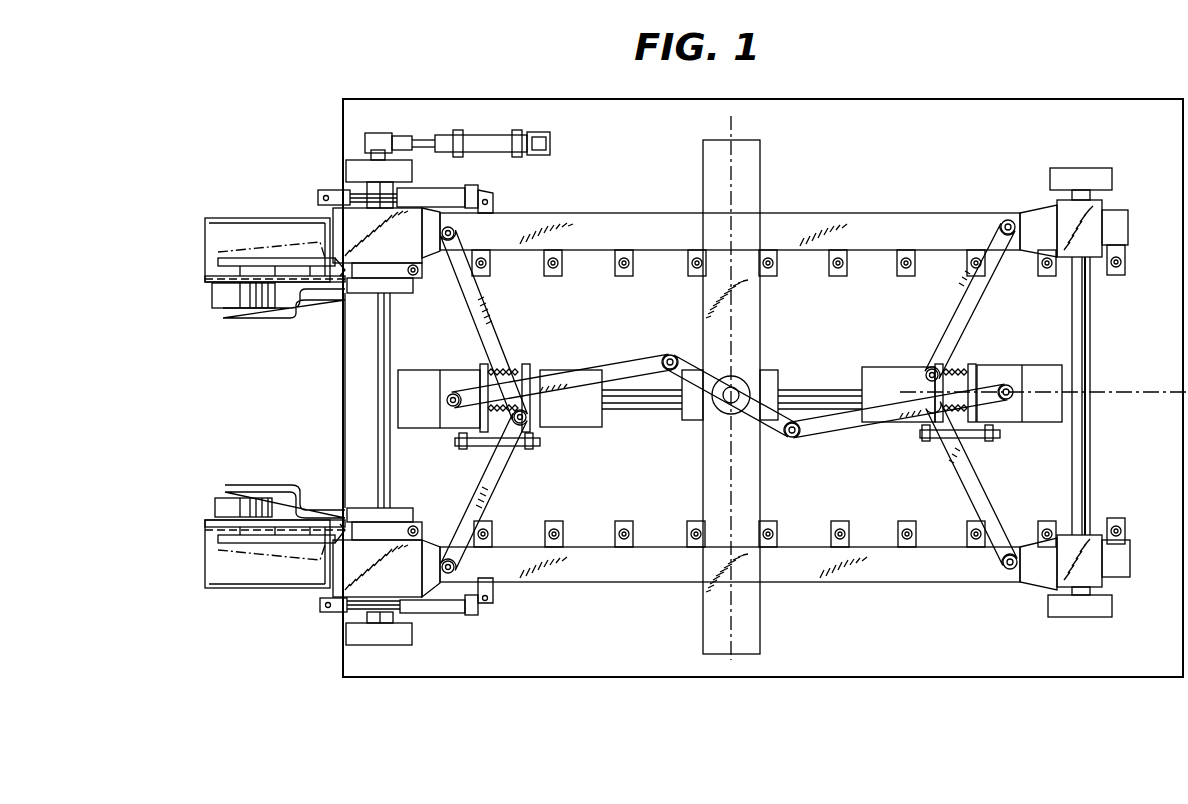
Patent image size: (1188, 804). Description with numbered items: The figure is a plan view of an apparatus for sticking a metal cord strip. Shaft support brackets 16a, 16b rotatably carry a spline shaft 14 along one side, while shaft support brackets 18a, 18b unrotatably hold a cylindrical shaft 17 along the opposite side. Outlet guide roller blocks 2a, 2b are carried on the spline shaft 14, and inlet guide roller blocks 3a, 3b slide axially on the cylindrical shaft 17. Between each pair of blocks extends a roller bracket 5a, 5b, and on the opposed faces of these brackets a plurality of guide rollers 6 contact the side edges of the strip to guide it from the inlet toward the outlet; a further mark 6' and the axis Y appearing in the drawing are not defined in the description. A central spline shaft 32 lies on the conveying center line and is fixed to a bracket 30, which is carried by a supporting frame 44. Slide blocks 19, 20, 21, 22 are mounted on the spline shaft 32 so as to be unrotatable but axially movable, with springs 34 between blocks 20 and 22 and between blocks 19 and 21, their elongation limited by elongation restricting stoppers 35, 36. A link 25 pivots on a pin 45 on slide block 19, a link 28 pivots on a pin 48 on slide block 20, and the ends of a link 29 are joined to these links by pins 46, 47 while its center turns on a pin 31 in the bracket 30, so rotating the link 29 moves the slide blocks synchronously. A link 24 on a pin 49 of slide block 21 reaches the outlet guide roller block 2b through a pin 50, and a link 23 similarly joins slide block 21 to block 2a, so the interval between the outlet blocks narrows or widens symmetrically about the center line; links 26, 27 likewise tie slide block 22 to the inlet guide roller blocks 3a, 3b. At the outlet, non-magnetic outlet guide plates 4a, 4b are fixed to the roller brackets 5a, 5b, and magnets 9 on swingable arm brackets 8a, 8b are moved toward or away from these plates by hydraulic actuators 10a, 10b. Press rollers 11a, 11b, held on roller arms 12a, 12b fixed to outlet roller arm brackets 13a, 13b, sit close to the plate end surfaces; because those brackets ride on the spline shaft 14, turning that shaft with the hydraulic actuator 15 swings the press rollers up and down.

The outlet guide roller block 2a is at (345, 226).
The outlet guide roller block 2b is at (348, 588).
The inlet guide roller block 3a is at (1100, 216).
The inlet guide roller block 3b is at (1102, 580).
The outlet guide plate 4a is at (203, 266).
The outlet guide plate 4b is at (205, 562).
The roller bracket 5a is at (580, 212).
The roller bracket 5b is at (575, 583).
The guide rollers 6 is at (799, 399).
The bolt 6' is at (432, 399).
The arm bracket 8a is at (218, 258).
The arm bracket 8b is at (210, 537).
The magnets 9 is at (207, 282).
The hydraulic actuator 10a is at (470, 194).
The hydraulic actuator 10b is at (456, 614).
The press roller 11a is at (216, 304).
The press roller 11b is at (215, 507).
The roller arm 12a is at (295, 322).
The roller arm 12b is at (278, 486).
The outlet roller arm bracket 13a is at (408, 293).
The outlet roller arm bracket 13b is at (415, 508).
The spline shaft 14 is at (392, 345).
The hydraulic actuator 15 is at (492, 130).
The shaft support bracket 16a is at (355, 170).
The shaft support bracket 16b is at (400, 640).
The cylindrical shaft 17 is at (1096, 360).
The shaft support bracket 18a is at (1104, 178).
The shaft support bracket 18b is at (1078, 612).
The slide block 19 is at (458, 370).
The slide block 20 is at (1040, 366).
The slide block 21 is at (588, 428).
The slide block 22 is at (889, 366).
The link 23 is at (505, 318).
The link 24 is at (497, 492).
The link 25 is at (622, 378).
The link 26 is at (952, 322).
The link 27 is at (952, 456).
The link 28 is at (845, 440).
The link 29 is at (770, 372).
The bracket 30 is at (680, 421).
The pin 31 is at (722, 412).
The spline shaft 32 is at (824, 387).
The spring 34 is at (503, 368).
The elongation restricting stopper 35 is at (968, 440).
The elongation restricting stopper 36 is at (535, 448).
The supporting frame 44 is at (762, 168).
The pin 45 is at (450, 406).
The pin 46 is at (670, 356).
The pin 47 is at (792, 440).
The pin 48 is at (1010, 400).
The pin 49 is at (545, 428).
The pin 50 is at (490, 583).
The center axis Y is at (731, 656).